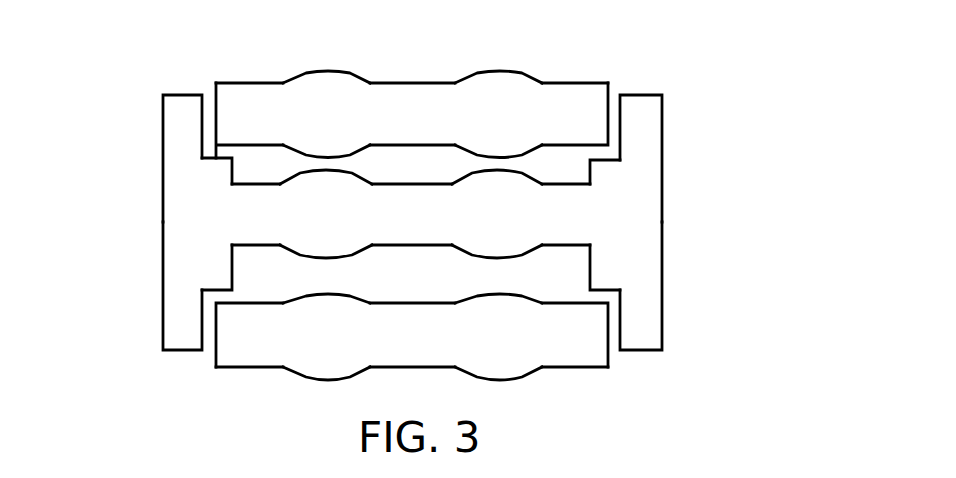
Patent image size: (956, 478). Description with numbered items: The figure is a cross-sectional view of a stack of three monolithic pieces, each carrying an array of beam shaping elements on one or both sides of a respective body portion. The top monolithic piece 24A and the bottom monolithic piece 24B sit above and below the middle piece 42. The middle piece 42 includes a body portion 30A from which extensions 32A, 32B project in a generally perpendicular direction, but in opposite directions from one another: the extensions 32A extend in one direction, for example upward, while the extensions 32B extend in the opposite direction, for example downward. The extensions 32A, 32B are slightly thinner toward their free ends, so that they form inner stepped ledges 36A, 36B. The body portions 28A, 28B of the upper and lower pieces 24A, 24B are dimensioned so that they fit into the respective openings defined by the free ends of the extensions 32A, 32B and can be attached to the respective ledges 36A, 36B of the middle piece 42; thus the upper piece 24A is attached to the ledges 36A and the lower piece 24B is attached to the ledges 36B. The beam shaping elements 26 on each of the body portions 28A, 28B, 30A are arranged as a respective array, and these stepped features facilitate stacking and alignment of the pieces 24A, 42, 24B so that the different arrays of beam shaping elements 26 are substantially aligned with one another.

The top monolithic piece 24A is at (440, 124).
The bottom monolithic piece 24B is at (448, 342).
The beam shaping elements 26 is at (332, 70).
The body portion of upper array 28A is at (380, 105).
The body portion of lower array 28B is at (470, 345).
The body portion of middle piece 30A is at (325, 212).
The extensions 32A is at (177, 178).
The extensions 32B is at (173, 268).
The inner stepped ledges 36A is at (213, 155).
The inner stepped ledges 36B is at (212, 292).
The middle piece 42 is at (440, 222).